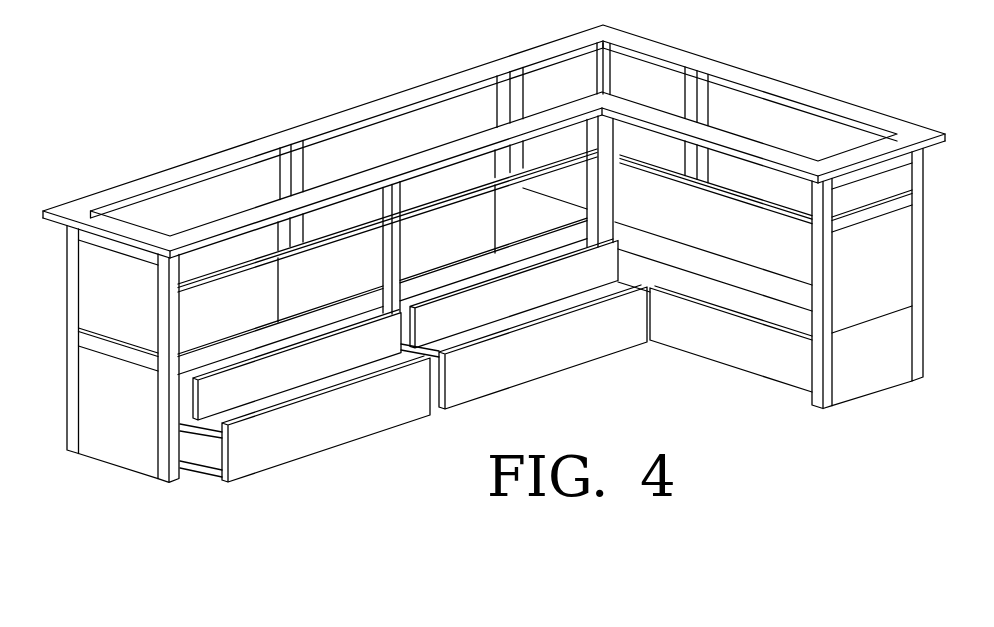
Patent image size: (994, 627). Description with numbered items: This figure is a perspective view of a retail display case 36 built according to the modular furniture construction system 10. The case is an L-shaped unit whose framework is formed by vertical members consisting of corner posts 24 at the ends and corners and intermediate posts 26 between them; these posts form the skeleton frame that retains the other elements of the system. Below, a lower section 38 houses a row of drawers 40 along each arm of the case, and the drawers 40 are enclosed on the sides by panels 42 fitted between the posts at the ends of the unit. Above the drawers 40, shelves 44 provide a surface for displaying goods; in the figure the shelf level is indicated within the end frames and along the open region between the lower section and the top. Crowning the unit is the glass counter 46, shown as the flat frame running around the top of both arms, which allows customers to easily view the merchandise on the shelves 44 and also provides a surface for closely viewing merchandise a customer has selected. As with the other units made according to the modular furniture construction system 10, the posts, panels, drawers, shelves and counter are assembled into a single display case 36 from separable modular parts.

The modular furniture construction system 10 is at (150, 140).
The corner posts 24 is at (63, 390).
The intermediate posts 26 is at (400, 241).
The retail display case 36 is at (850, 100).
The lower section 38 is at (912, 347).
The drawers 40 is at (238, 383).
The panels 42 is at (103, 467).
The shelves 44 is at (236, 323).
The glass counter 46 is at (387, 148).